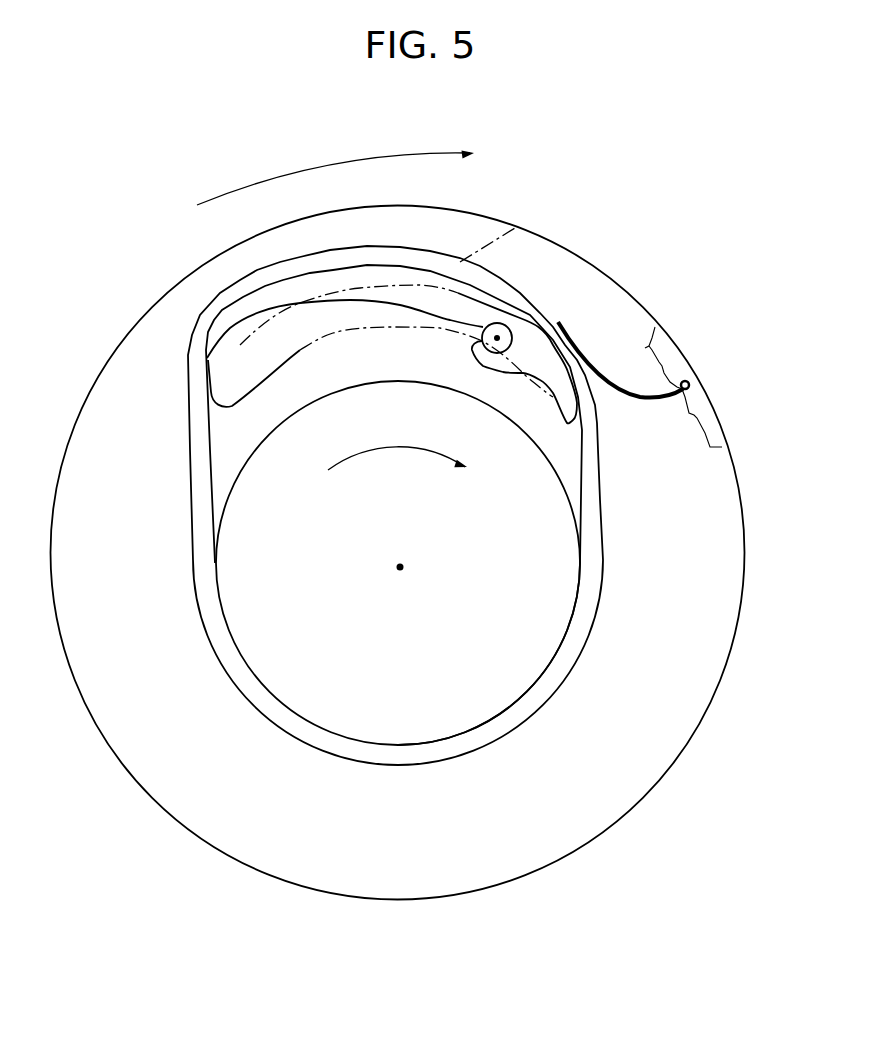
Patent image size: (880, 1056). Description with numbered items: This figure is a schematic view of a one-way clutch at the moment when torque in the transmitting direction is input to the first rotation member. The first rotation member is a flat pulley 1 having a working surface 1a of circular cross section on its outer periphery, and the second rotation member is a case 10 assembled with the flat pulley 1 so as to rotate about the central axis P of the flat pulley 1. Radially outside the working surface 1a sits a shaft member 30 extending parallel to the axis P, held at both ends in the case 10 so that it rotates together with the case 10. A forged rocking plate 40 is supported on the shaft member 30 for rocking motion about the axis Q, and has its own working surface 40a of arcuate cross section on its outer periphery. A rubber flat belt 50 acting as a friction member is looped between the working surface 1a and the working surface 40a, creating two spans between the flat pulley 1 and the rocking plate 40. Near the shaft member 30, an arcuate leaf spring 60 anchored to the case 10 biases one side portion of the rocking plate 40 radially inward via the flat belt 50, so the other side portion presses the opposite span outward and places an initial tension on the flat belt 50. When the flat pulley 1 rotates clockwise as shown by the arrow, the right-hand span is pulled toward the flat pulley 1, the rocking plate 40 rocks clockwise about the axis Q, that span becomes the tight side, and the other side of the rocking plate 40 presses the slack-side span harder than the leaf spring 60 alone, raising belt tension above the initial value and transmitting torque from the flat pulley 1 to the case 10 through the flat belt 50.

The case 10 is at (622, 287).
The flat belt 50 is at (603, 553).
The flat pulley 1 is at (512, 713).
The working surface 1a is at (465, 737).
The rocking plate 40 is at (428, 268).
The working surface 40a is at (237, 303).
The shaft member 30 is at (497, 323).
The axis of the shaft member Q is at (494, 339).
The leaf spring 60 is at (643, 397).
The central axis of the flat pulley P is at (395, 567).